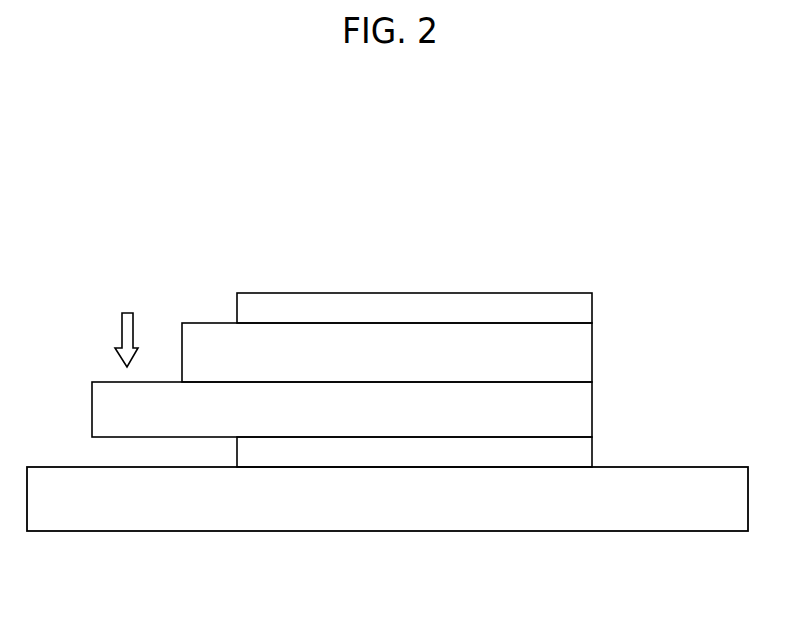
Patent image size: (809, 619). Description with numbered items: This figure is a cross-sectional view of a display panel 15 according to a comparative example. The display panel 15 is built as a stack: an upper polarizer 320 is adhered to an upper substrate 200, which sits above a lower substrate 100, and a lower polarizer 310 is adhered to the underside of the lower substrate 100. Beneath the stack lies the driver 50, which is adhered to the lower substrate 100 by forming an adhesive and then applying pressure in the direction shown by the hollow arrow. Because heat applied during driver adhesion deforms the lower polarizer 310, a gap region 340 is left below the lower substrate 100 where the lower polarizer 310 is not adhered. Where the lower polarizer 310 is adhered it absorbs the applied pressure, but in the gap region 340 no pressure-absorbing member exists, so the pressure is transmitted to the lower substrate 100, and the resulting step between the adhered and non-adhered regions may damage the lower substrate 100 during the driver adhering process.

The display panel 15 is at (172, 225).
The upper polarizer 320 is at (592, 308).
The upper substrate 200 is at (592, 345).
The lower substrate 100 is at (592, 397).
The lower polarizer 310 is at (592, 447).
The gap region 340 is at (128, 455).
The driver 50 is at (387, 531).